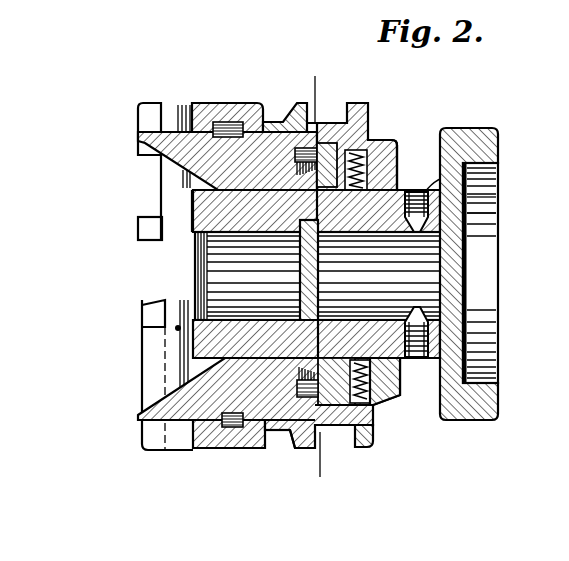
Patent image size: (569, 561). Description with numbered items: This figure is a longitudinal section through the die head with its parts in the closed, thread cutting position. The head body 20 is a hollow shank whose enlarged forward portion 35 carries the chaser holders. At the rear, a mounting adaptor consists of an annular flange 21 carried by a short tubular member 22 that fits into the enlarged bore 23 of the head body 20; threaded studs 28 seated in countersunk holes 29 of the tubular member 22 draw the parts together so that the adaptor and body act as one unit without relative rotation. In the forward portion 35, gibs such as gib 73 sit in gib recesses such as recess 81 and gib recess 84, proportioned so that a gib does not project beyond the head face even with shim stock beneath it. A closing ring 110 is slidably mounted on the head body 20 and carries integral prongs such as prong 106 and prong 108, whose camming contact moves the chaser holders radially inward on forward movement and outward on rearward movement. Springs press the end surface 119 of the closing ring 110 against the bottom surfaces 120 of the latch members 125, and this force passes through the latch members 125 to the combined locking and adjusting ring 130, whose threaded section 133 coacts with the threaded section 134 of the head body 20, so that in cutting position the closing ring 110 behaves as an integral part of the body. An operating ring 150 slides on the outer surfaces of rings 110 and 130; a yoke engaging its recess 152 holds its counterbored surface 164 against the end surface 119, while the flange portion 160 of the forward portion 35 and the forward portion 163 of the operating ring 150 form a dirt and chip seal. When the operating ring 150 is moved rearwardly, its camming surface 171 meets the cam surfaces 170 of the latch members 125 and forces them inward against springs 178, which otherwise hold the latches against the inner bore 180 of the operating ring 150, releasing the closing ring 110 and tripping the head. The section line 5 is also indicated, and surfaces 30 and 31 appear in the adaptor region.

The section line 5 is at (316, 278).
The head body 20 is at (190, 257).
The annular flange 21 is at (478, 131).
The tubular member 22 is at (386, 238).
The enlarged bore 23 is at (312, 291).
The threaded studs 28 is at (470, 178).
The countersunk holes 29 is at (417, 312).
The shoulder 30 is at (470, 197).
The groove 31 is at (468, 213).
The forward portion 35 is at (212, 106).
The gib 73 is at (150, 316).
The recess 81 is at (168, 179).
The gib recess 84 is at (165, 349).
The prong 106 is at (141, 137).
The prong 108 is at (141, 413).
The closing ring 110 is at (248, 398).
The end surface 119 is at (303, 441).
The bottom surfaces 120 is at (287, 437).
The latch members 125 is at (376, 426).
The combined locking and adjusting ring 130 is at (388, 393).
The threaded section 133 is at (398, 192).
The threaded section 134 is at (392, 164).
The operating ring 150 is at (366, 114).
The recess 152 is at (338, 110).
The flange portion 160 is at (228, 120).
The forward portion 163 is at (276, 120).
The counterbored surface 164 is at (318, 116).
The cam surfaces 170 is at (373, 434).
The camming surface 171 is at (337, 430).
The springs 178 is at (398, 380).
The inner bore 180 is at (368, 141).